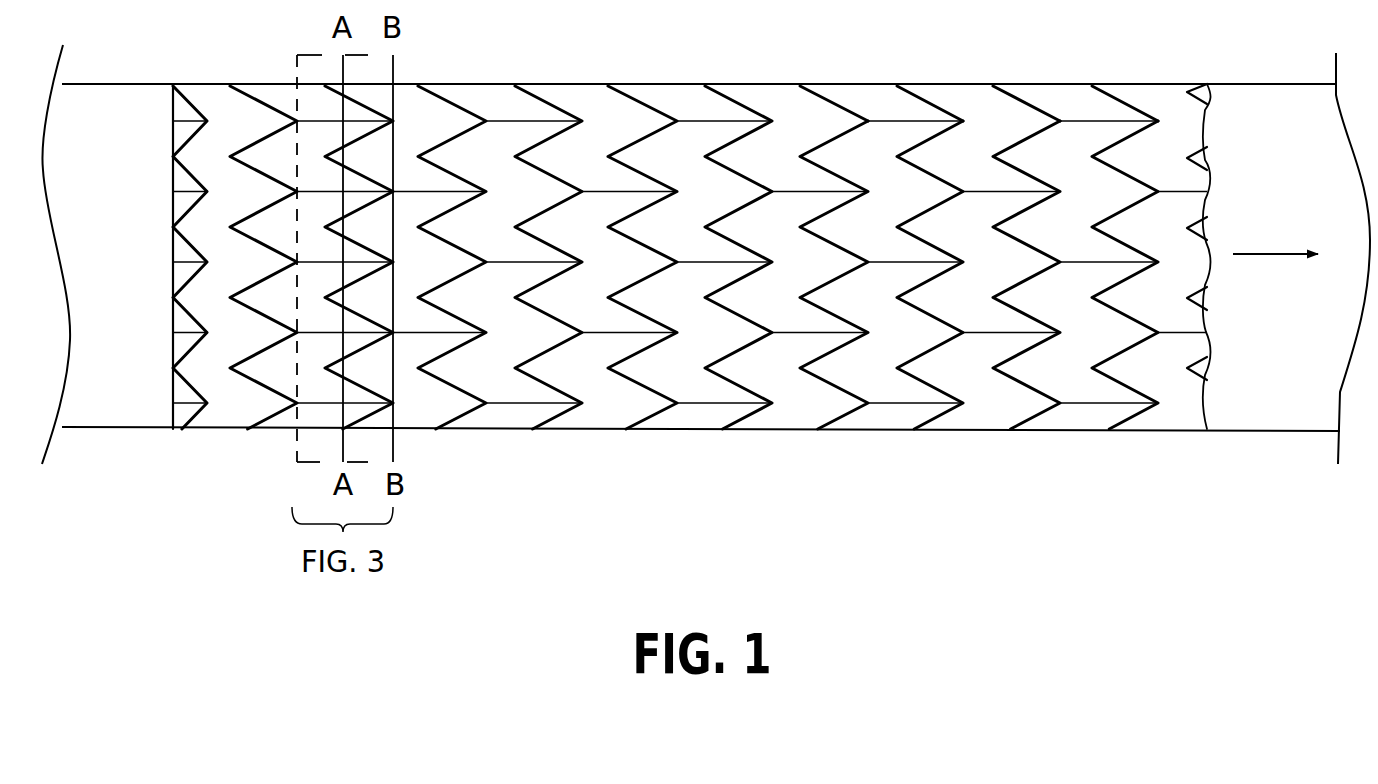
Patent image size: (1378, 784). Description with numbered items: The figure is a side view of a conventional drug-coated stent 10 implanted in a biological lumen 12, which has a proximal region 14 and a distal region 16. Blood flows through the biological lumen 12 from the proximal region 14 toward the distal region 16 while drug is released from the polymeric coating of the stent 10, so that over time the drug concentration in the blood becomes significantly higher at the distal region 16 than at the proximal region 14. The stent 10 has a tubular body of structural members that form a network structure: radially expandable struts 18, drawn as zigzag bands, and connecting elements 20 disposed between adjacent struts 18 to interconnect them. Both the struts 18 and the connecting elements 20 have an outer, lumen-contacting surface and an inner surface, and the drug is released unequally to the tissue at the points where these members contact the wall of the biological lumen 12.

The stent 10 is at (700, 275).
The biological lumen 12 is at (1261, 184).
The proximal region 14 is at (110, 396).
The distal region 16 is at (1296, 393).
The struts 18 is at (1035, 113).
The connecting elements 20 is at (700, 118).